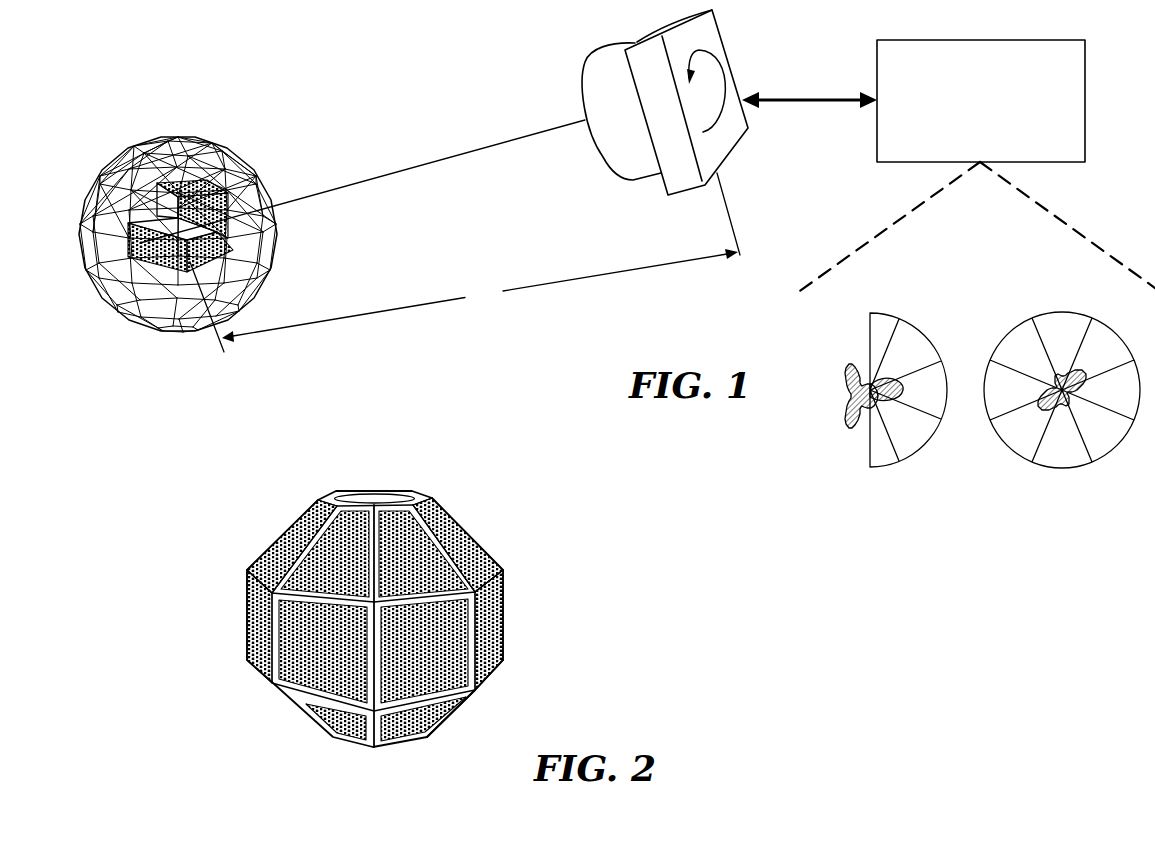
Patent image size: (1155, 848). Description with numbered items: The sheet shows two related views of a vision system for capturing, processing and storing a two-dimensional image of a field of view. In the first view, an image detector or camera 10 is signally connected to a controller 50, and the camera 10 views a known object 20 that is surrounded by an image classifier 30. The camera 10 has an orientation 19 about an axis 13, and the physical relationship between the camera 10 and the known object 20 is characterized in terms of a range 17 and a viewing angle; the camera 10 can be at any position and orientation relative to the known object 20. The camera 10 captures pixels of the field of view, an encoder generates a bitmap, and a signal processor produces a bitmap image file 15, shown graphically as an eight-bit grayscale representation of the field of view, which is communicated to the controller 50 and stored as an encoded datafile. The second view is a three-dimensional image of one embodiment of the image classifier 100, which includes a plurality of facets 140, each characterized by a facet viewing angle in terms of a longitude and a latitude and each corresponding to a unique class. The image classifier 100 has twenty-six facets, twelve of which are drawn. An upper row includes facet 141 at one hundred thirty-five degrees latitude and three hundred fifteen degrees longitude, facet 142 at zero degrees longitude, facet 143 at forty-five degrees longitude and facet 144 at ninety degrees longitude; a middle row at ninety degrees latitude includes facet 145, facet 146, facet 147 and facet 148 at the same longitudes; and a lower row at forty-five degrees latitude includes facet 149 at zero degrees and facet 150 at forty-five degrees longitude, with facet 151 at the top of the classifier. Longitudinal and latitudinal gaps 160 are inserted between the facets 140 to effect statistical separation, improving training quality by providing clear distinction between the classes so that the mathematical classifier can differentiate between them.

In FIG. 1, the image detector (camera) 10 is at (652, 124).
In FIG. 1, the axis 13 is at (733, 213).
In FIG. 1, the bitmap image file 15 is at (955, 344).
In FIG. 1, the range 17 is at (474, 307).
In FIG. 1, the orientation 19 is at (717, 73).
In FIG. 1, the known object 20 is at (192, 208).
In FIG. 1, the image classifier 30 is at (118, 297).
In FIG. 1, the controller 50 is at (970, 111).
In FIG. 2, the image classifier 100 is at (275, 518).
In FIG. 2, the facets 140 is at (387, 492).
In FIG. 2, the facet 141 is at (277, 548).
In FIG. 2, the facet 142 is at (318, 568).
In FIG. 2, the facet 143 is at (393, 568).
In FIG. 2, the facet 144 is at (468, 550).
In FIG. 2, the facet 145 is at (257, 622).
In FIG. 2, the facet 146 is at (306, 660).
In FIG. 2, the facet 147 is at (401, 660).
In FIG. 2, the facet 148 is at (493, 648).
In FIG. 2, the facet 149 is at (340, 723).
In FIG. 2, the facet 150 is at (413, 723).
In FIG. 2, the facet 151 is at (360, 490).
In FIG. 2, the longitudinal and latitudinal gaps 160 is at (487, 693).